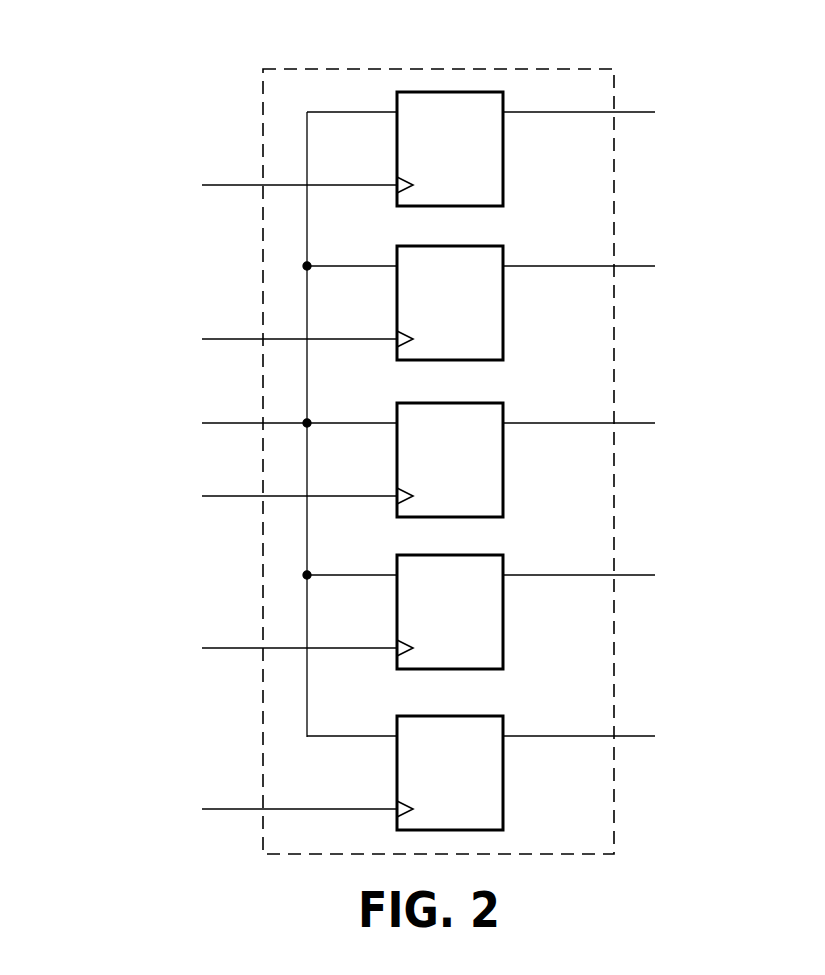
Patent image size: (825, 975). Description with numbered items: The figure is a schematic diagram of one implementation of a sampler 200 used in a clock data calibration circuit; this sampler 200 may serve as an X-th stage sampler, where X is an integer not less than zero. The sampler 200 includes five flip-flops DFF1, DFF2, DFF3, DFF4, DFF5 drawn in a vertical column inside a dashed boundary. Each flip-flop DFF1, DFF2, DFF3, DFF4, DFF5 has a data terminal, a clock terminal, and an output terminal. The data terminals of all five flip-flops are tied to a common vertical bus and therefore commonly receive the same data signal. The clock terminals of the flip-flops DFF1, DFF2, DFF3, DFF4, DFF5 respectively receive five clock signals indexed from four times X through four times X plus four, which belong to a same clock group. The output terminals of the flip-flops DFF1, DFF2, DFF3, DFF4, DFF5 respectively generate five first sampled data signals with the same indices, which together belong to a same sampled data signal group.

The sampler 200 is at (541, 69).
The flip-flop DFF1 is at (503, 185).
The flip-flop DFF2 is at (503, 339).
The flip-flop DFF3 is at (503, 496).
The flip-flop DFF4 is at (503, 648).
The flip-flop DFF5 is at (503, 809).